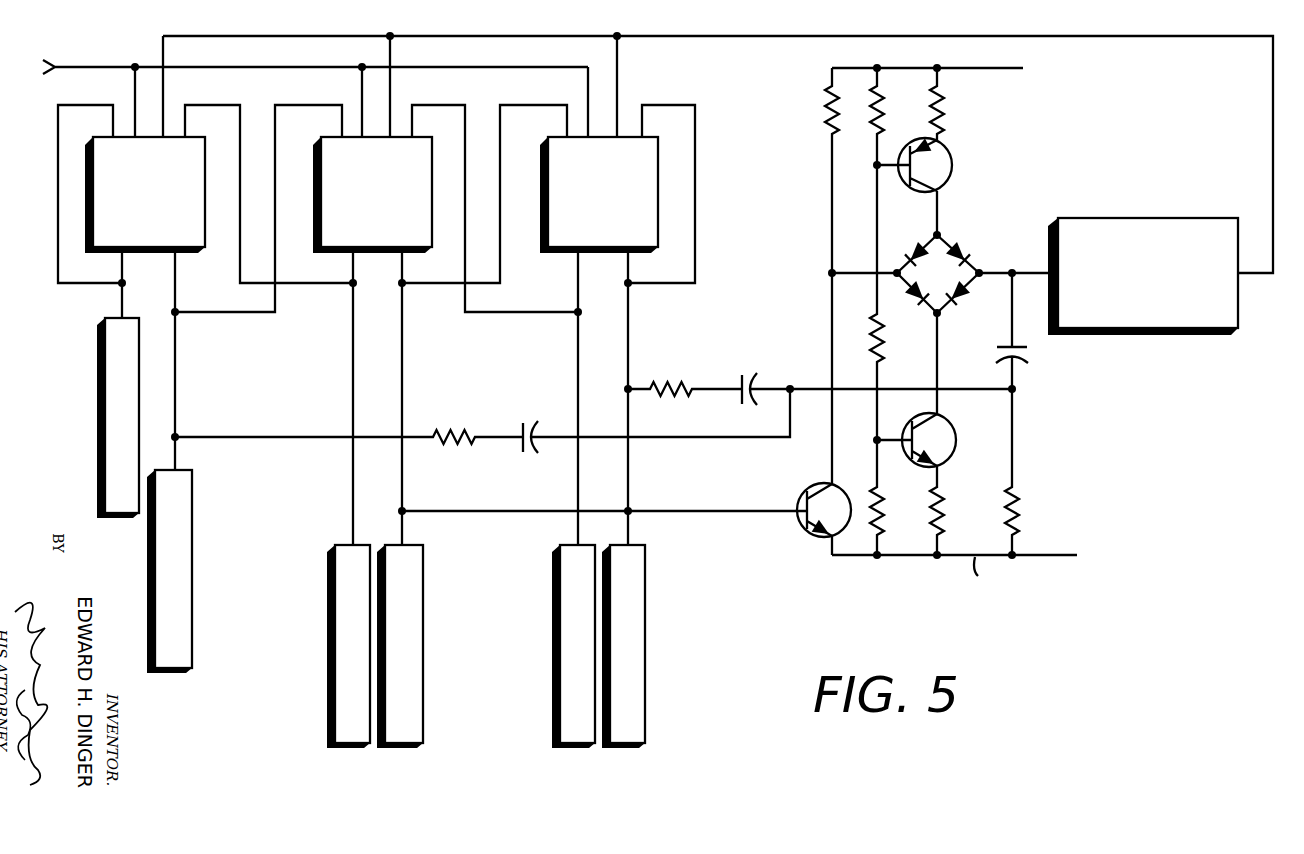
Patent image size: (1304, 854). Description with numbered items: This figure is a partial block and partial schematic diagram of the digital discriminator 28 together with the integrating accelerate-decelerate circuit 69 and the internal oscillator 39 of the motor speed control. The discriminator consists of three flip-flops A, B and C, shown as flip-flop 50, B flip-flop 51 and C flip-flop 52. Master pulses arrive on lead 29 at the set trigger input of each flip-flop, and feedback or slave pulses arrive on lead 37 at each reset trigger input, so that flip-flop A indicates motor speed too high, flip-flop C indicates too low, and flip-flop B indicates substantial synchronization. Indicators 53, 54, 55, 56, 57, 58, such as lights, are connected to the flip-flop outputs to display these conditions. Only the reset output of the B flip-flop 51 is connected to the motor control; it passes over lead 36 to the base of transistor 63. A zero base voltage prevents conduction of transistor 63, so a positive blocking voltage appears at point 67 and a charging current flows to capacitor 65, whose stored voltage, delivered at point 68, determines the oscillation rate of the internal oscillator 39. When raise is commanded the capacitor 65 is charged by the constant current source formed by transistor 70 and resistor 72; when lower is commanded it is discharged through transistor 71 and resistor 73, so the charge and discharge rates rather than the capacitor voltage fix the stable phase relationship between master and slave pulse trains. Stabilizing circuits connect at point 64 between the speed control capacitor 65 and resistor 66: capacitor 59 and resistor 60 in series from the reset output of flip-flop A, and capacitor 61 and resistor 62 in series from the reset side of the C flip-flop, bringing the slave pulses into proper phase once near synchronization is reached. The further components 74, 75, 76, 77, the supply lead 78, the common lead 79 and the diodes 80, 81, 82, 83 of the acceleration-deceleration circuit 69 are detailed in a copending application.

The counter (stages A, B, C) 28 is at (388, 382).
The lead 29 is at (105, 67).
The lead to transistor 63 36 is at (832, 332).
The lead 37 is at (1095, 36).
The internal oscillator 39 is at (1110, 218).
The flip-flop A 50 is at (178, 256).
The B flip-flop 51 is at (404, 256).
The output lead of stage C 52 is at (631, 256).
The indicator 53 is at (104, 425).
The indicator 54 is at (192, 600).
The indicator 55 is at (330, 685).
The indicator 56 is at (423, 685).
The indicator 57 is at (555, 685).
The indicator 58 is at (645, 685).
The capacitor 59 is at (522, 428).
The resistor 60 is at (455, 432).
The capacitor 61 is at (742, 380).
The resistor 62 is at (674, 384).
The transistor 63 is at (810, 535).
The point 64 is at (1012, 392).
The capacitor 65 is at (1026, 352).
The resistor 66 is at (1019, 521).
The point 67 is at (856, 273).
The junction 68 is at (996, 273).
The integrating acceleration-deceleration circuit 69 is at (950, 285).
The transistor 70 is at (951, 170).
The transistor 71 is at (955, 445).
The resistor 72 is at (944, 113).
The resistor 73 is at (944, 521).
The resistor 74 is at (884, 113).
The resistor 75 is at (884, 355).
The resistor 76 is at (884, 521).
The resistor 77 is at (825, 113).
The supply lead +V 78 is at (998, 70).
The common lead 79 is at (1065, 557).
The diode 80 is at (968, 250).
The diode 81 is at (964, 302).
The diode 82 is at (908, 302).
The diode 83 is at (905, 250).